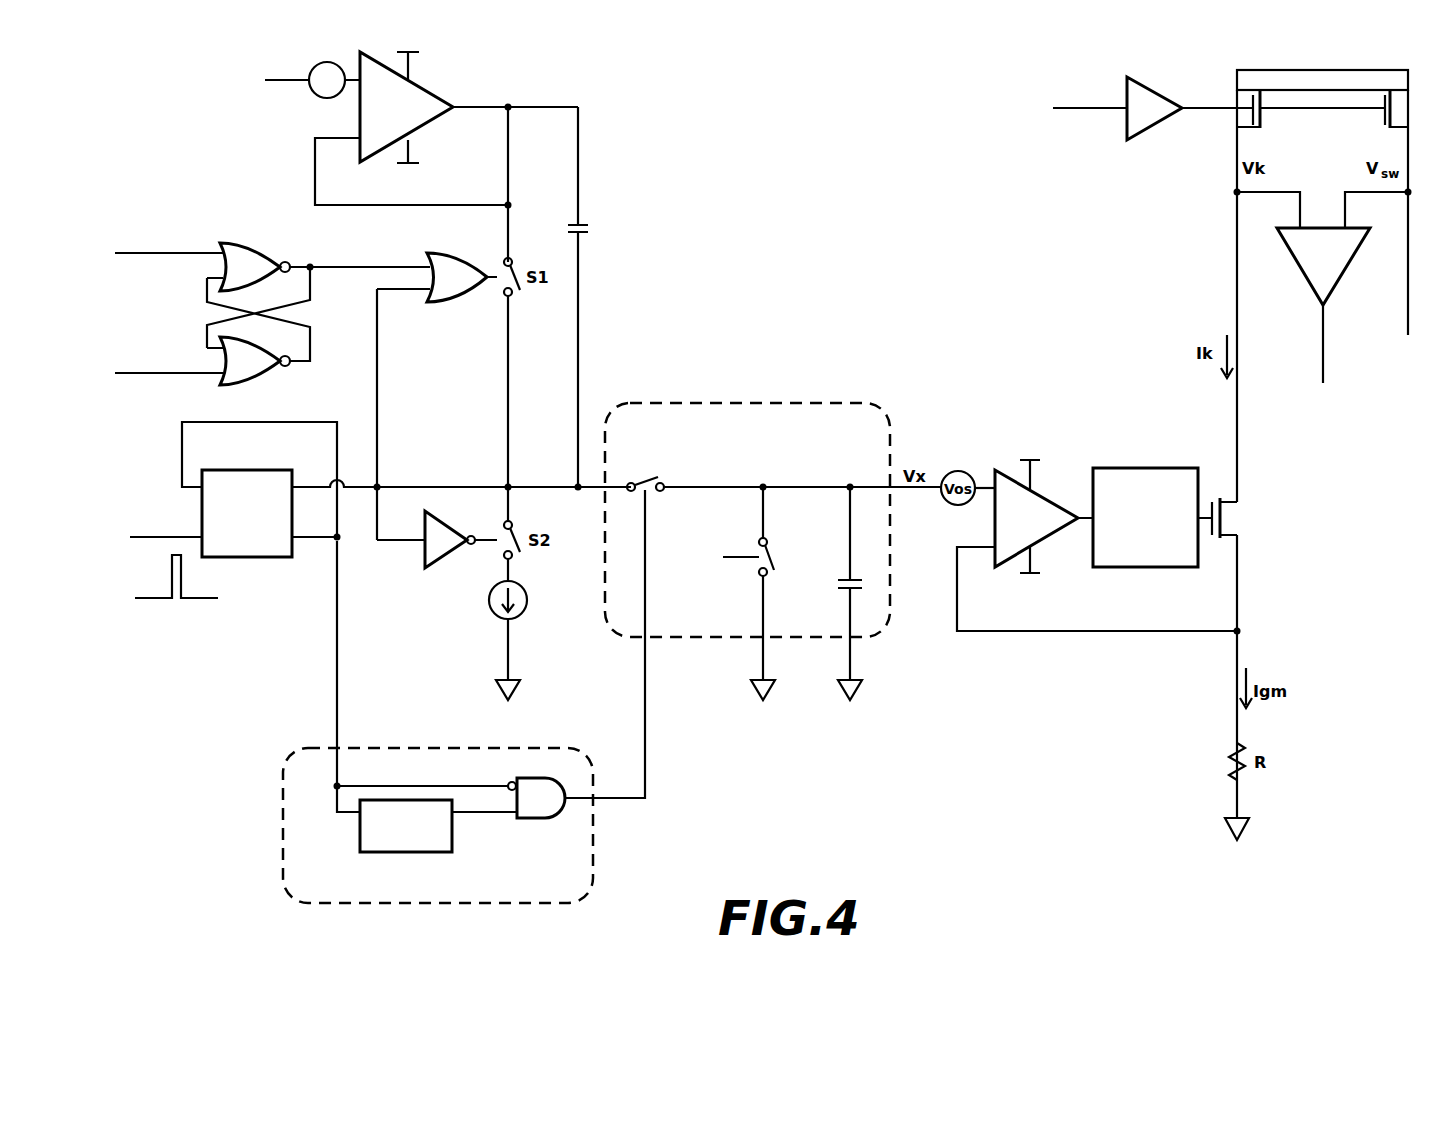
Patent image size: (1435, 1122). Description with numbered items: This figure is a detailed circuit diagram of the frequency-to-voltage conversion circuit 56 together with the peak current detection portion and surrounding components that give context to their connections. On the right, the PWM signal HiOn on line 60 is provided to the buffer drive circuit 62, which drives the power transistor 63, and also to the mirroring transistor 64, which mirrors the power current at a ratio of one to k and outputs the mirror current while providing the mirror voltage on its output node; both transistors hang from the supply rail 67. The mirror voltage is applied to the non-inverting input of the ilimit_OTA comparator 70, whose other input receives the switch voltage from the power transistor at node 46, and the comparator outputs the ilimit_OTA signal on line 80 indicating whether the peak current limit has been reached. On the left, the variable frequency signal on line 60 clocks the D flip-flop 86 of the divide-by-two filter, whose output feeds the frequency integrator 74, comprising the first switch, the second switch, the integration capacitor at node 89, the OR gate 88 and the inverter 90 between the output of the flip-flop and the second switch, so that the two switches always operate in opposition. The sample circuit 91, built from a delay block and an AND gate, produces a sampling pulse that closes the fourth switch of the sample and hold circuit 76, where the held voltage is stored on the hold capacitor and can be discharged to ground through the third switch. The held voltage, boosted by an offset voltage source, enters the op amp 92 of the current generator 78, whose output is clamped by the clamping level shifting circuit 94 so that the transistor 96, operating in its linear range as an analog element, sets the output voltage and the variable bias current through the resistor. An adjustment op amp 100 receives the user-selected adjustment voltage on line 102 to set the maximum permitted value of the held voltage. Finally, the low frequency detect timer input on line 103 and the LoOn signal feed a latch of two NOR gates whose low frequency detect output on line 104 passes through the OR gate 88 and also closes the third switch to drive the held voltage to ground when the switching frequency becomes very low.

The node 46 is at (1408, 304).
The frequency-to-voltage conversion circuit 56 is at (770, 340).
The line 60 is at (182, 537).
The buffer drive circuit 62 is at (1159, 91).
The power transistor 63 is at (1381, 120).
The mirroring transistor 64 is at (1237, 120).
The supply rail 67 is at (1262, 70).
The comparator 70 is at (1305, 274).
The frequency integrator 74 is at (263, 658).
The sample and hold circuit 76 is at (798, 403).
The current generator 78 is at (1065, 400).
The line 80 is at (1321, 360).
The D flip-flop 86 is at (245, 557).
The OR gate 88 is at (445, 302).
The integration capacitor C1 node 89 is at (578, 307).
The inverter 90 is at (454, 527).
The sample circuit 91 is at (283, 861).
The op amp 92 is at (1040, 497).
The clamping level shifting circuit 94 is at (1165, 468).
The transistor 96 is at (1242, 516).
The op amp 100 is at (424, 91).
The line 102 is at (285, 77).
The line 103 is at (175, 253).
The line 104 is at (365, 267).